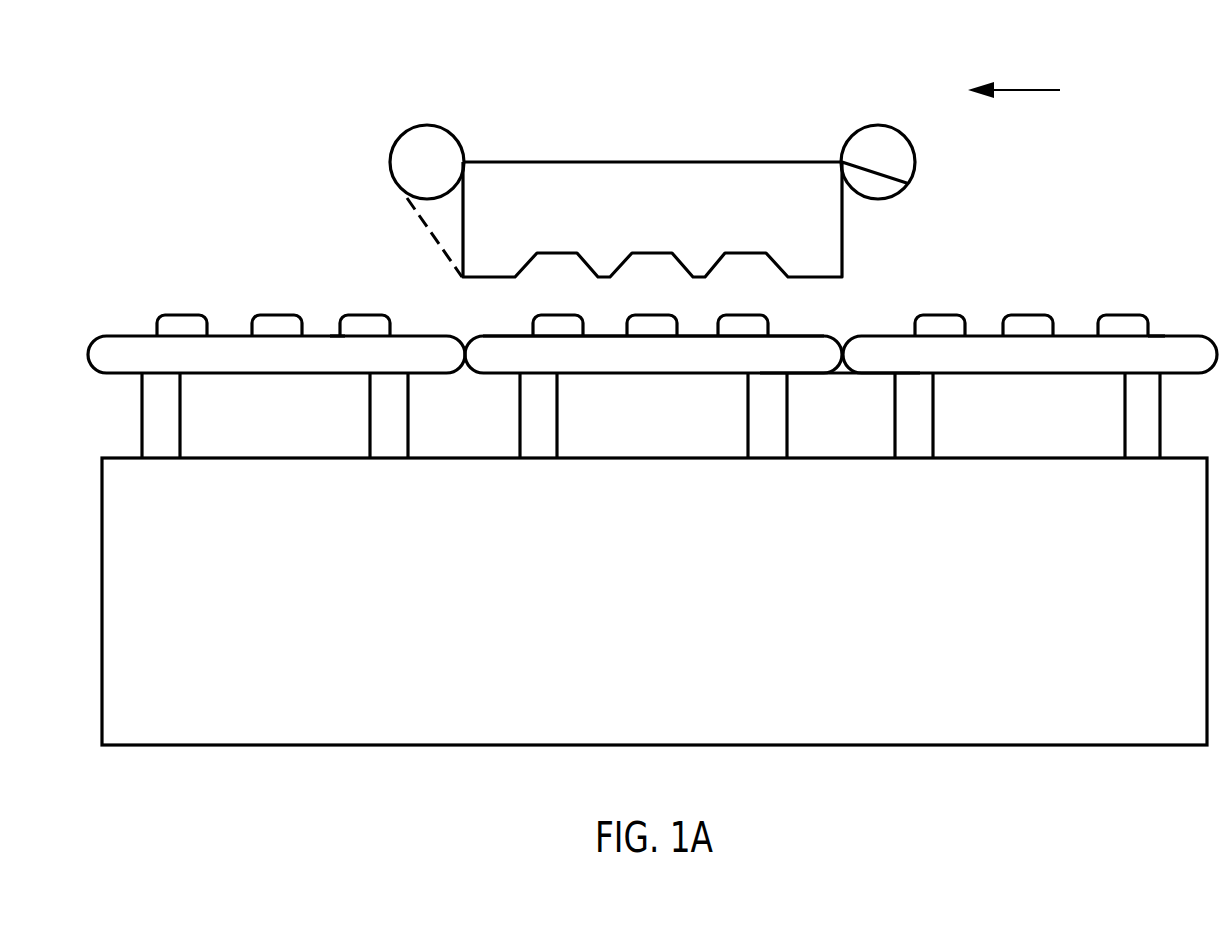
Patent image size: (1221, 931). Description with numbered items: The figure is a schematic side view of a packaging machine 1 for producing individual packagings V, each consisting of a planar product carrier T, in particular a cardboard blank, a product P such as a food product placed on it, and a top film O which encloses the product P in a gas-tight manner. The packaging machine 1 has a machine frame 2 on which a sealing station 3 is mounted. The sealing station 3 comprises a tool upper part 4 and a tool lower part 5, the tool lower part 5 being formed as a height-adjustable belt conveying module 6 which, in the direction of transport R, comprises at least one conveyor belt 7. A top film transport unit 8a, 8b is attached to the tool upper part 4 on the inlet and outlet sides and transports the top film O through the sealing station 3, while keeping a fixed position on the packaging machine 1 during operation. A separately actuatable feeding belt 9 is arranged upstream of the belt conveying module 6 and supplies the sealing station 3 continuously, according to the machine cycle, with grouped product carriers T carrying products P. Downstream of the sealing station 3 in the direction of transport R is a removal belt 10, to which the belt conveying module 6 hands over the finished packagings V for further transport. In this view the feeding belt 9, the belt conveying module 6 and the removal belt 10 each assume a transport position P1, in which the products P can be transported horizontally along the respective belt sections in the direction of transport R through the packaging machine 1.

The packaging machine 1 is at (576, 175).
The machine frame 2 is at (1166, 720).
The sealing station 3 is at (490, 143).
The tool upper part 4 is at (648, 172).
The tool lower part 5 is at (491, 420).
The belt conveying module 6 is at (640, 391).
The conveyor belt 7 is at (497, 335).
The top film transport unit 8a is at (894, 178).
The top film transport unit 8b is at (443, 178).
The feeding belt 9 is at (1015, 391).
The removal belt 10 is at (265, 391).
The packaging V is at (171, 298).
The top film O is at (430, 227).
The product P is at (278, 323).
The product carrier T is at (335, 332).
The transport position P1 is at (822, 390).
The direction of transport R is at (1014, 76).